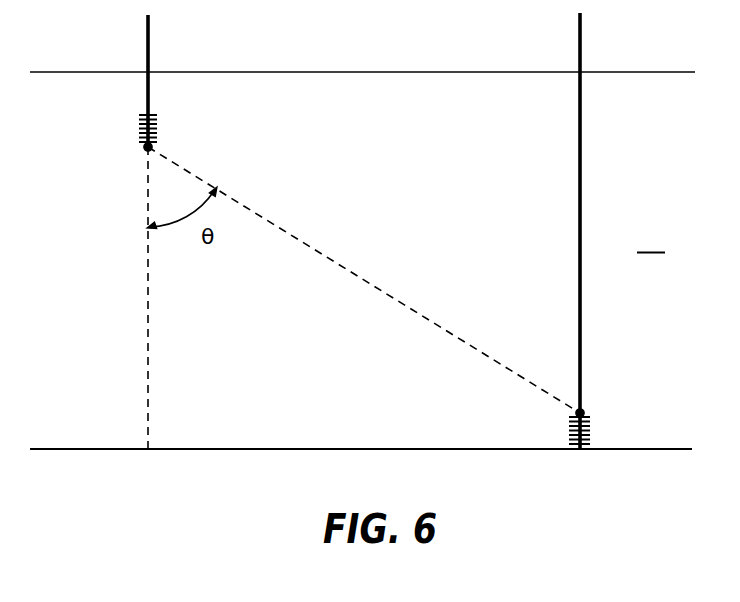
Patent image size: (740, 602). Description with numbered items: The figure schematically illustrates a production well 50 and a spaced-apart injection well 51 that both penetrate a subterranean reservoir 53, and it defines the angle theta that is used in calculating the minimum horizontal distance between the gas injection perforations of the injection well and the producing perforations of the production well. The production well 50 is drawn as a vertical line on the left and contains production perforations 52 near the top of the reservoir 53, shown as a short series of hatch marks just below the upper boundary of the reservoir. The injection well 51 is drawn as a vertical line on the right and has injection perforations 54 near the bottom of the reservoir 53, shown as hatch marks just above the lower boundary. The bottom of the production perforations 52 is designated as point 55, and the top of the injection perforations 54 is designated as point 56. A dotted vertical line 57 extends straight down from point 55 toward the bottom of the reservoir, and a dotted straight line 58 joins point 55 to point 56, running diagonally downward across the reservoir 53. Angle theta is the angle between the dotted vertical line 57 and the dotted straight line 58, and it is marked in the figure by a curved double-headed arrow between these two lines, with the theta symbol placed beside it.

The production well 50 is at (150, 44).
The injection well 51 is at (582, 43).
The production perforations 52 is at (138, 124).
The reservoir 53 is at (652, 240).
The injection perforations 54 is at (565, 430).
The point 55 is at (146, 150).
The point 56 is at (583, 412).
The dotted vertical line 57 is at (150, 330).
The dotted straight line 58 is at (295, 237).